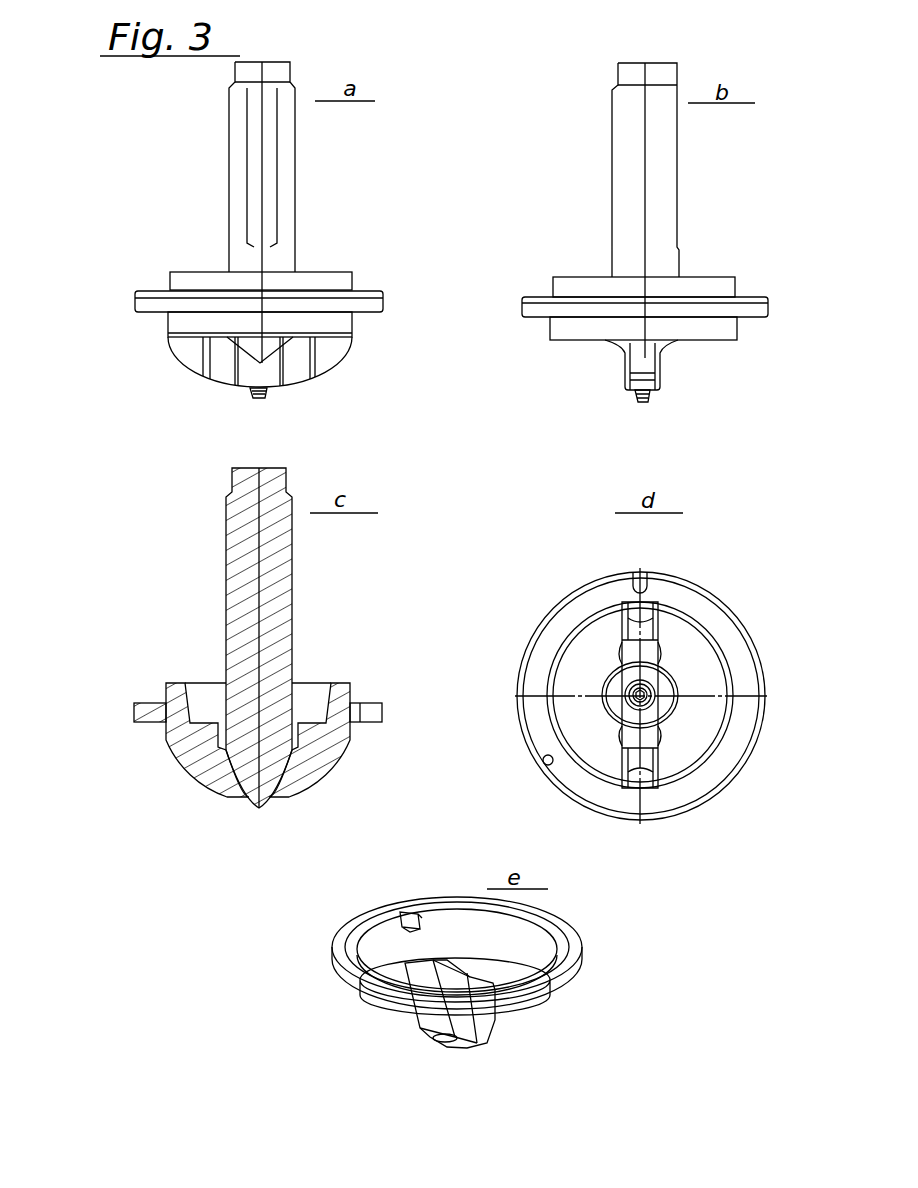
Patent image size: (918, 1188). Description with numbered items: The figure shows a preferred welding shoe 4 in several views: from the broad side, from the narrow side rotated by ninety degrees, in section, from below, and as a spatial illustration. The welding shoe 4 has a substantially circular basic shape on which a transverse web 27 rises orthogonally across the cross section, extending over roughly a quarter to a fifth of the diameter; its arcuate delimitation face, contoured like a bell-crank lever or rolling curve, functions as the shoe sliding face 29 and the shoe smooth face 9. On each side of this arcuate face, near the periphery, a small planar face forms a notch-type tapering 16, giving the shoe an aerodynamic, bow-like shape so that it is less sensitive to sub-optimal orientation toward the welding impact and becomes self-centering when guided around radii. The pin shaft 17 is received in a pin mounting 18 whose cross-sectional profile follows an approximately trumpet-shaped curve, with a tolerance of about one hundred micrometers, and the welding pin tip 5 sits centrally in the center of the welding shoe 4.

The welding shoe 4 is at (550, 328).
The welding pin tip 5 is at (258, 395).
The shoe smooth face 9 is at (230, 387).
The notch-type tapering 16 is at (637, 378).
The pin shaft 17 is at (295, 180).
The pin mounting 18 is at (280, 763).
The transverse web 27 is at (667, 705).
The shoe sliding face 29 is at (182, 378).